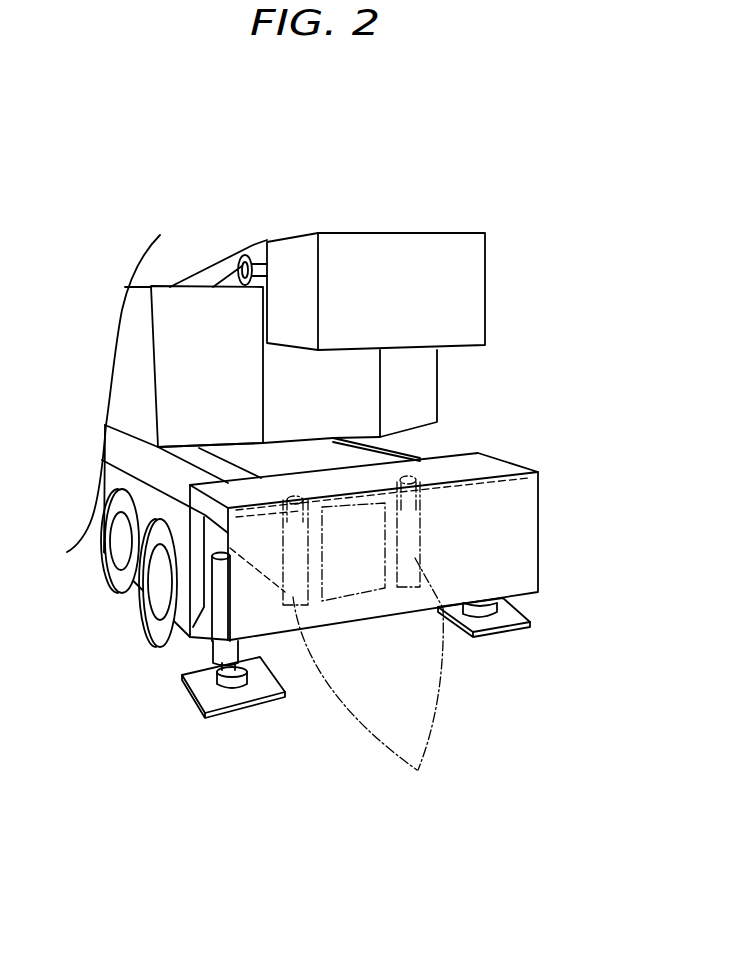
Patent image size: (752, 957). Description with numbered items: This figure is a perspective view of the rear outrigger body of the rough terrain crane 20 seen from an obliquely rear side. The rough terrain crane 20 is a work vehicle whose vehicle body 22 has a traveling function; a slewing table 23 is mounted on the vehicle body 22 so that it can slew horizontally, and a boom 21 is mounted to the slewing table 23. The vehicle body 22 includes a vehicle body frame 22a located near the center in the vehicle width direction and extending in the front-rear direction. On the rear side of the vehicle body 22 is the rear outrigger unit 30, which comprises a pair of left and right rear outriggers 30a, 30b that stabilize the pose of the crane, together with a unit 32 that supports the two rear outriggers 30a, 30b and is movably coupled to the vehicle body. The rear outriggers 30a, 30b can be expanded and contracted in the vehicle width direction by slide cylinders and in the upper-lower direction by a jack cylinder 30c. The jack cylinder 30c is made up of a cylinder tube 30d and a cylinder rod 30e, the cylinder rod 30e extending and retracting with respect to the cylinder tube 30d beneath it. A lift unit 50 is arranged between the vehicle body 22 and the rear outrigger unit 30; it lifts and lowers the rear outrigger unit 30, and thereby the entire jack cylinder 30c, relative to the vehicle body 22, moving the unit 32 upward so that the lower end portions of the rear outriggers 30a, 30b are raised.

The rough terrain crane 20 is at (290, 187).
The boom 21 is at (215, 277).
The vehicle body 22 is at (93, 556).
The vehicle body frame 22a is at (297, 599).
The slewing table 23 is at (178, 325).
The rear outrigger unit 30 is at (497, 537).
The rear outrigger 30a is at (182, 675).
The rear outrigger 30b is at (503, 633).
The jack cylinder 30c is at (86, 767).
The cylinder tube 30d is at (213, 663).
The cylinder rod 30e is at (230, 682).
The unit 32 is at (505, 558).
The lift unit 50 is at (368, 680).